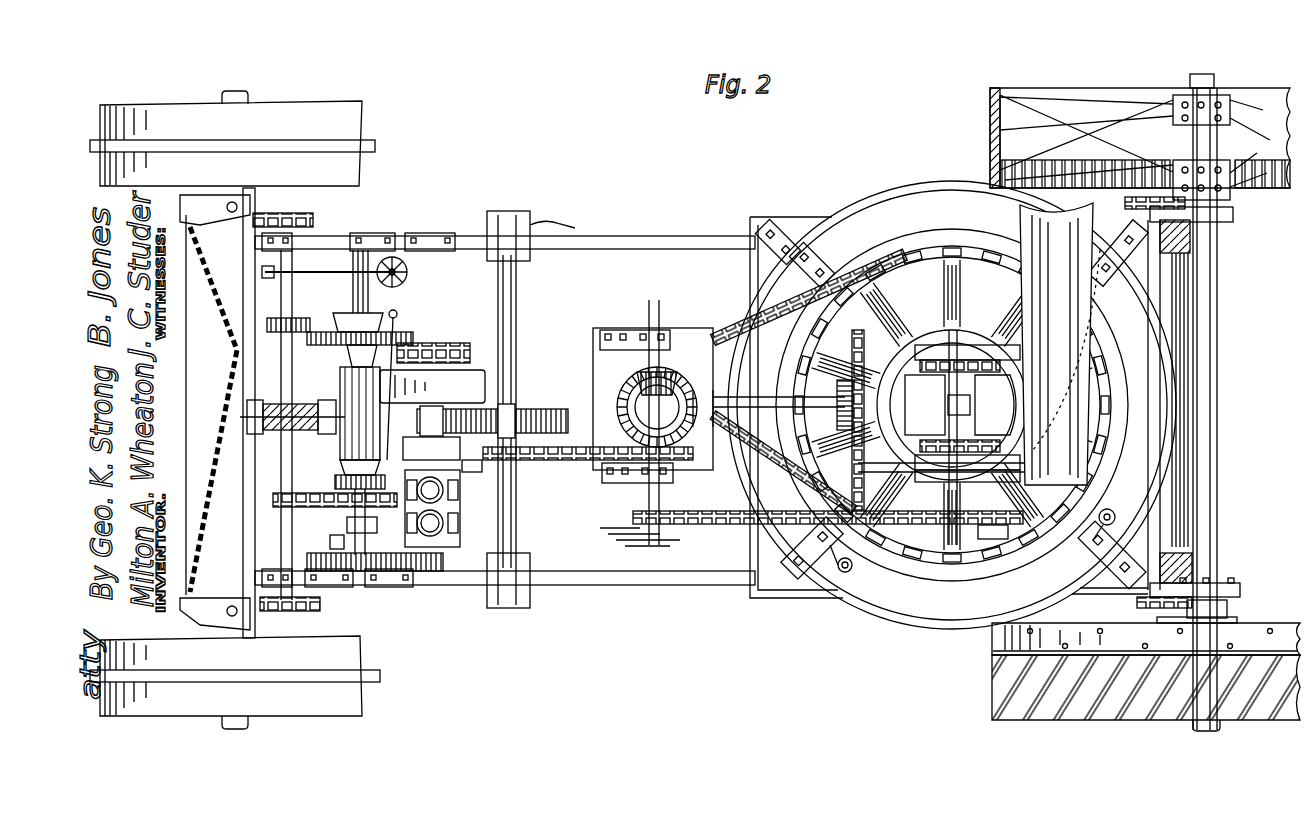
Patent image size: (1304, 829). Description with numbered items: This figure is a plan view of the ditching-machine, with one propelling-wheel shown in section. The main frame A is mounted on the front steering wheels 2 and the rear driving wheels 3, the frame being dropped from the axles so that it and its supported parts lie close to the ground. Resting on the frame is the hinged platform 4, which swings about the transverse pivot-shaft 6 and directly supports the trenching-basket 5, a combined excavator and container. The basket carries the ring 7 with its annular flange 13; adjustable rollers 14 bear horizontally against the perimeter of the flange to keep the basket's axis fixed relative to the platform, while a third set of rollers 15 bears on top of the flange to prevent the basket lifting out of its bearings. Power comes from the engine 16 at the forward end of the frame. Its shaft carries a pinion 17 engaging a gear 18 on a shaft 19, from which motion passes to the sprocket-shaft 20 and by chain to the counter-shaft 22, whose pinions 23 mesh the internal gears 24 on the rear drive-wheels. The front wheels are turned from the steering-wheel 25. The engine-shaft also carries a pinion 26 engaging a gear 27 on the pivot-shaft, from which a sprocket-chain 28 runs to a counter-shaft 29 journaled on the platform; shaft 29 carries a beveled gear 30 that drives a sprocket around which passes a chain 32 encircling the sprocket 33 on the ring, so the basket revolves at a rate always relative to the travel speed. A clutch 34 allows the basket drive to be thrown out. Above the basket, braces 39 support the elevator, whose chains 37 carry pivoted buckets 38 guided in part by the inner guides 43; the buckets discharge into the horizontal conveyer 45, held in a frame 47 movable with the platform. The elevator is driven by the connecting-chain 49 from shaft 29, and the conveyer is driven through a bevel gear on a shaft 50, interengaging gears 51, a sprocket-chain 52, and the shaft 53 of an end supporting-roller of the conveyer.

The front steering wheels 2 is at (235, 410).
The rear driving wheels 3 is at (1145, 409).
The platform 4 is at (672, 595).
The trenching-basket 5 is at (952, 405).
The pivot-shaft 6 is at (531, 409).
The ring 7 is at (1110, 443).
The annular flange 13 is at (948, 584).
The adjustable rollers 14 is at (986, 546).
The third set of rollers 15 is at (959, 553).
The engine 16 is at (447, 508).
The pinion 17 is at (389, 560).
The gear 18 is at (328, 541).
The shaft 19 is at (374, 534).
The sprocket-shaft 20 is at (294, 473).
The counter-shaft 22 is at (1137, 604).
The pinions 23 is at (1130, 204).
The internal gears 24 is at (1255, 182).
The steering-wheel 25 is at (405, 280).
The pinion 26 is at (432, 373).
The gear 27 is at (492, 412).
The sprocket-chain 28 is at (562, 460).
The counter-shaft 29 is at (645, 495).
The beveled gear 30 is at (637, 378).
The chain 32 is at (740, 332).
The sprocket 33 is at (790, 318).
The clutch 34 is at (446, 458).
The chains 37 is at (945, 325).
The buckets 38 is at (960, 405).
The braces 39 is at (787, 240).
The inner guides 43 is at (993, 538).
The horizontal conveyer 45 is at (1060, 344).
The frame 47 is at (640, 544).
The connecting-chain 49 is at (713, 513).
The shaft 50 is at (750, 392).
The interengaging gears 51 is at (709, 405).
The sprocket-chain 52 is at (840, 395).
The shaft 53 is at (941, 484).